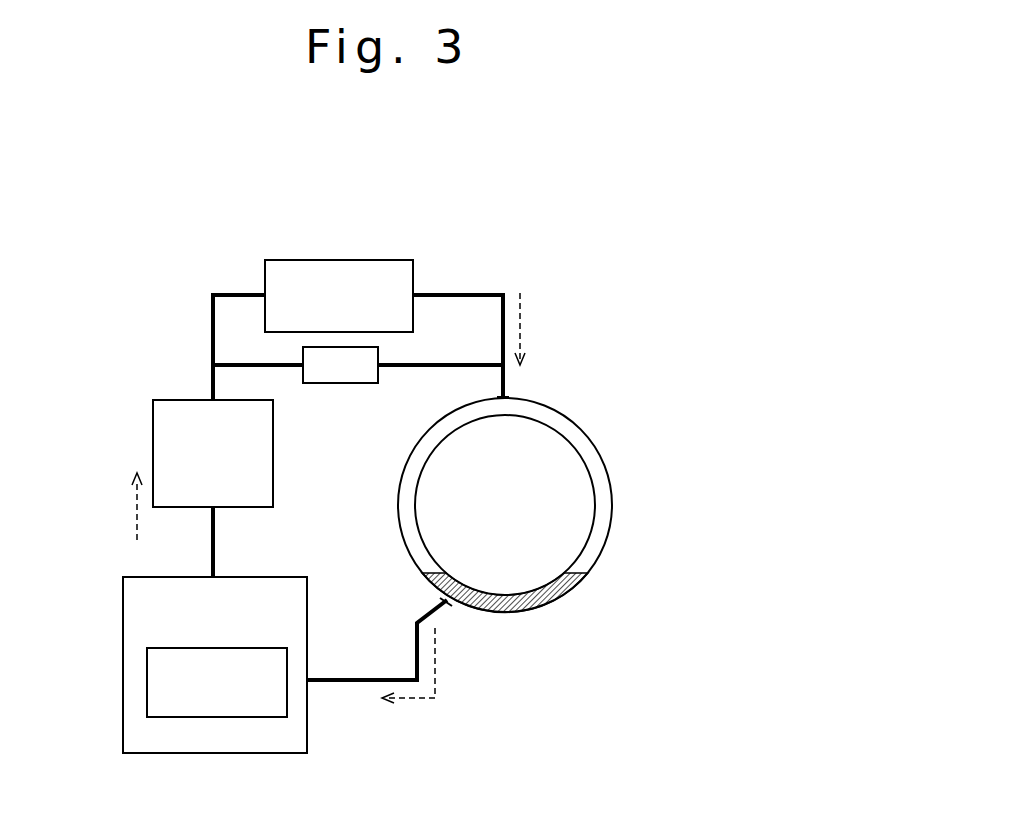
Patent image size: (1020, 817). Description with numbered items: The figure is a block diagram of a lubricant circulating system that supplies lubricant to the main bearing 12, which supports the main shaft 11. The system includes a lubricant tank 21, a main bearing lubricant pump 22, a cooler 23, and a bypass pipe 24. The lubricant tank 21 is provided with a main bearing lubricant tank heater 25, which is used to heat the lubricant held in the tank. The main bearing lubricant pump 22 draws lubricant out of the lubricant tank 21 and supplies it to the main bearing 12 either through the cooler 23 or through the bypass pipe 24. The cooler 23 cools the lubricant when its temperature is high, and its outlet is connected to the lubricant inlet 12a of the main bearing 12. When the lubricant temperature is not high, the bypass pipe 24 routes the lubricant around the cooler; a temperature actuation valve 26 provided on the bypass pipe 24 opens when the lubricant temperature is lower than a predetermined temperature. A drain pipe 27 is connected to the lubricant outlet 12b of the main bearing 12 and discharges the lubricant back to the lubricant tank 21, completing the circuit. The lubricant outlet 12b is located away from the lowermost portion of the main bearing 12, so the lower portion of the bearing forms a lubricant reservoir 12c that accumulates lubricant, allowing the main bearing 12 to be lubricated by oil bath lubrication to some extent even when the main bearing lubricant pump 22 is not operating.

The main shaft 11 is at (458, 518).
The main bearing 12 is at (576, 429).
The lubricant inlet 12a is at (505, 393).
The lubricant outlet 12b is at (447, 607).
The lubricant reservoir 12c is at (540, 606).
The lubricant tank 21 is at (122, 613).
The main bearing lubricant pump 22 is at (153, 438).
The cooler 23 is at (303, 259).
The bypass pipe 24 is at (433, 364).
The main bearing lubricant tank heater 25 is at (146, 683).
The temperature actuation valve 26 is at (340, 384).
The drain pipe 27 is at (414, 647).